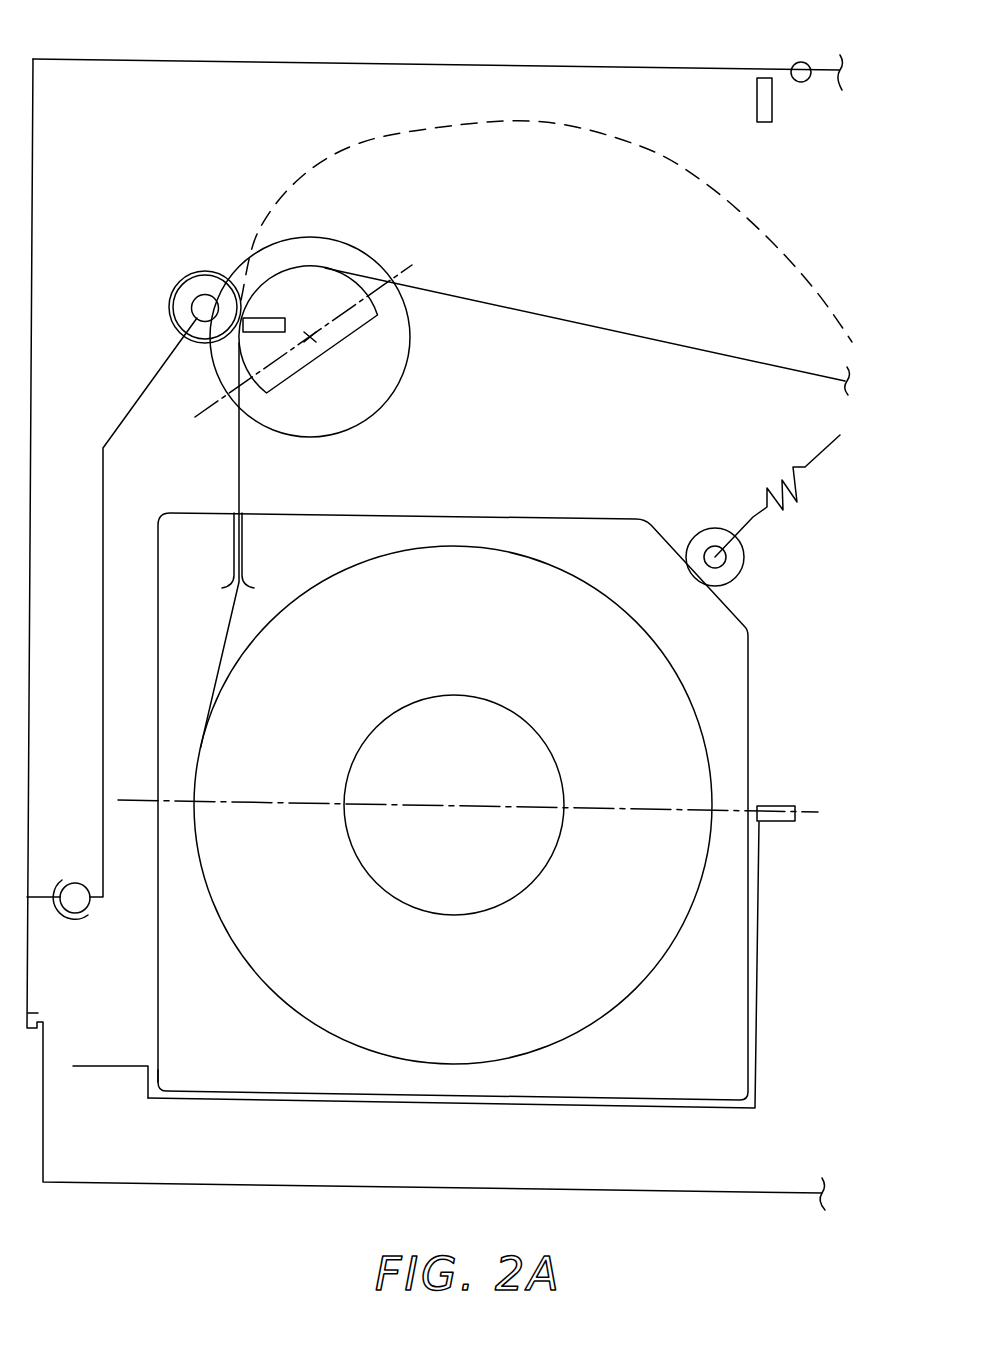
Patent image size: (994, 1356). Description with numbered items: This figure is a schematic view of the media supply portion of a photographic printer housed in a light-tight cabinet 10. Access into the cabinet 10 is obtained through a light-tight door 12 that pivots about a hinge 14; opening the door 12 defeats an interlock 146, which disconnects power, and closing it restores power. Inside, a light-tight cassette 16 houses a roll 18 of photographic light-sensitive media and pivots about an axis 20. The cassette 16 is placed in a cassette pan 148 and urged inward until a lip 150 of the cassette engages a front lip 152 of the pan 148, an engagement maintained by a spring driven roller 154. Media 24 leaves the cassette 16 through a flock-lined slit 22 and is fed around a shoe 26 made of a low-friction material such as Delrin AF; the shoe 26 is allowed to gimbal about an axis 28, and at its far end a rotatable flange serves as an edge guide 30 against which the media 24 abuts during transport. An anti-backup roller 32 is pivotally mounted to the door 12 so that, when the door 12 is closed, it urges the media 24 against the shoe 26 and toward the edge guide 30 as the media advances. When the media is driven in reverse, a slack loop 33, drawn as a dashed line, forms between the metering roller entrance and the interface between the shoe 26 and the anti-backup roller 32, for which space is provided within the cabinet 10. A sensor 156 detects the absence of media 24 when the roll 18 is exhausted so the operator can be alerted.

The light-tight cabinet 10 is at (312, 1188).
The door 12 is at (320, 60).
The hinge 14 is at (801, 62).
The light-tight cassette 16 is at (563, 517).
The roll 18 is at (617, 958).
The axis 20 is at (665, 810).
The flock-lined slit 22 is at (233, 560).
The media 24 is at (557, 316).
The shoe 26 is at (348, 332).
The axis 28 is at (418, 255).
The edge guide 30 is at (348, 405).
The anti-backup roller 32 is at (192, 292).
The slack loop 33 is at (700, 182).
The interlock 146 is at (757, 100).
The cassette pan 148 is at (612, 1108).
The lip 150 is at (172, 1088).
The front lip 152 is at (148, 1082).
The spring driven roller 154 is at (728, 570).
The sensor 156 is at (270, 318).